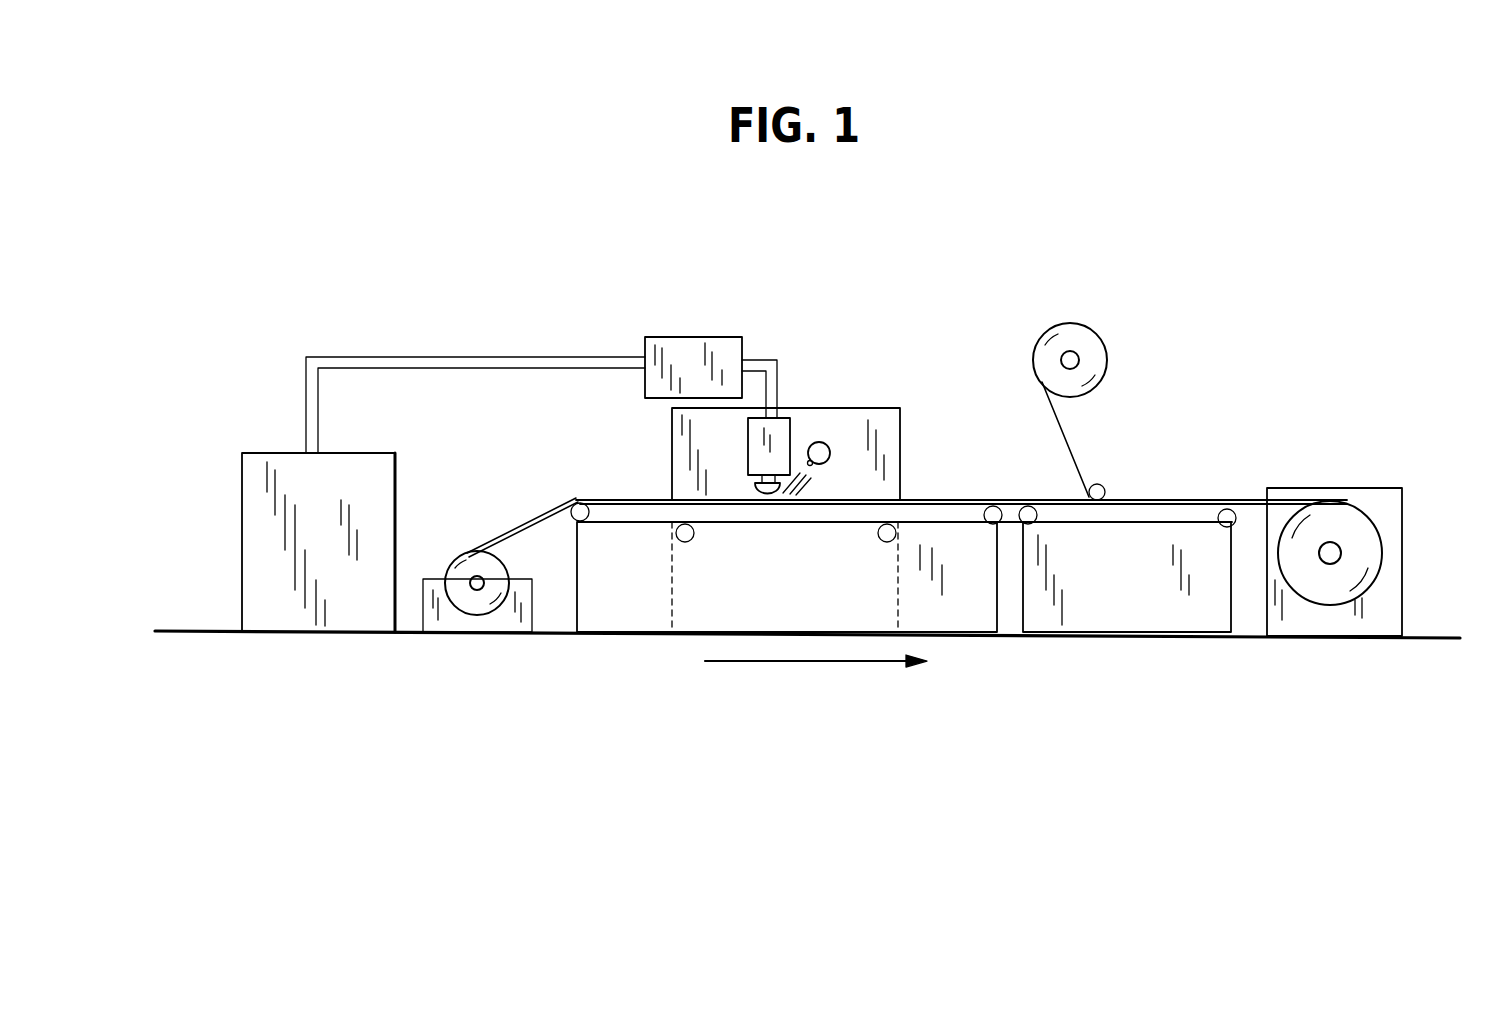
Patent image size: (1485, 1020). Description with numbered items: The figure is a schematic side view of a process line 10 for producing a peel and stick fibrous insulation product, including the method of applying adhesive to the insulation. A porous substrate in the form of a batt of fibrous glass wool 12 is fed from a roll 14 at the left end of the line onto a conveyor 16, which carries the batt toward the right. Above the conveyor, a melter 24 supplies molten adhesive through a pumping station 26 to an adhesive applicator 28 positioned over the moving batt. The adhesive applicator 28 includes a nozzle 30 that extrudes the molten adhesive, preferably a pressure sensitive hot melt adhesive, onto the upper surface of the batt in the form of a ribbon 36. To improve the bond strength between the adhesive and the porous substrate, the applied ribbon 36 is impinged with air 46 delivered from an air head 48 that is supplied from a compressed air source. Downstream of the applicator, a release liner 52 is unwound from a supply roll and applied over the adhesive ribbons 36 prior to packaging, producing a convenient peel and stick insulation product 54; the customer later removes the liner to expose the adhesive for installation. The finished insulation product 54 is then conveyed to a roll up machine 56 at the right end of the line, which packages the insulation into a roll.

The process line 10 is at (349, 310).
The batt of fibrous glass wool 12 is at (528, 515).
The roll 14 is at (465, 610).
The conveyor 16 is at (630, 524).
The melter 24 is at (253, 540).
The pumping station 26 is at (683, 343).
The adhesive applicator 28 is at (780, 422).
The nozzle 30 is at (762, 494).
The ribbon 36 is at (953, 498).
The air 46 is at (807, 494).
The air head 48 is at (822, 442).
The release liner 52 is at (1073, 457).
The peel and stick insulation product 54 is at (1247, 503).
The roll up machine 56 is at (1405, 543).